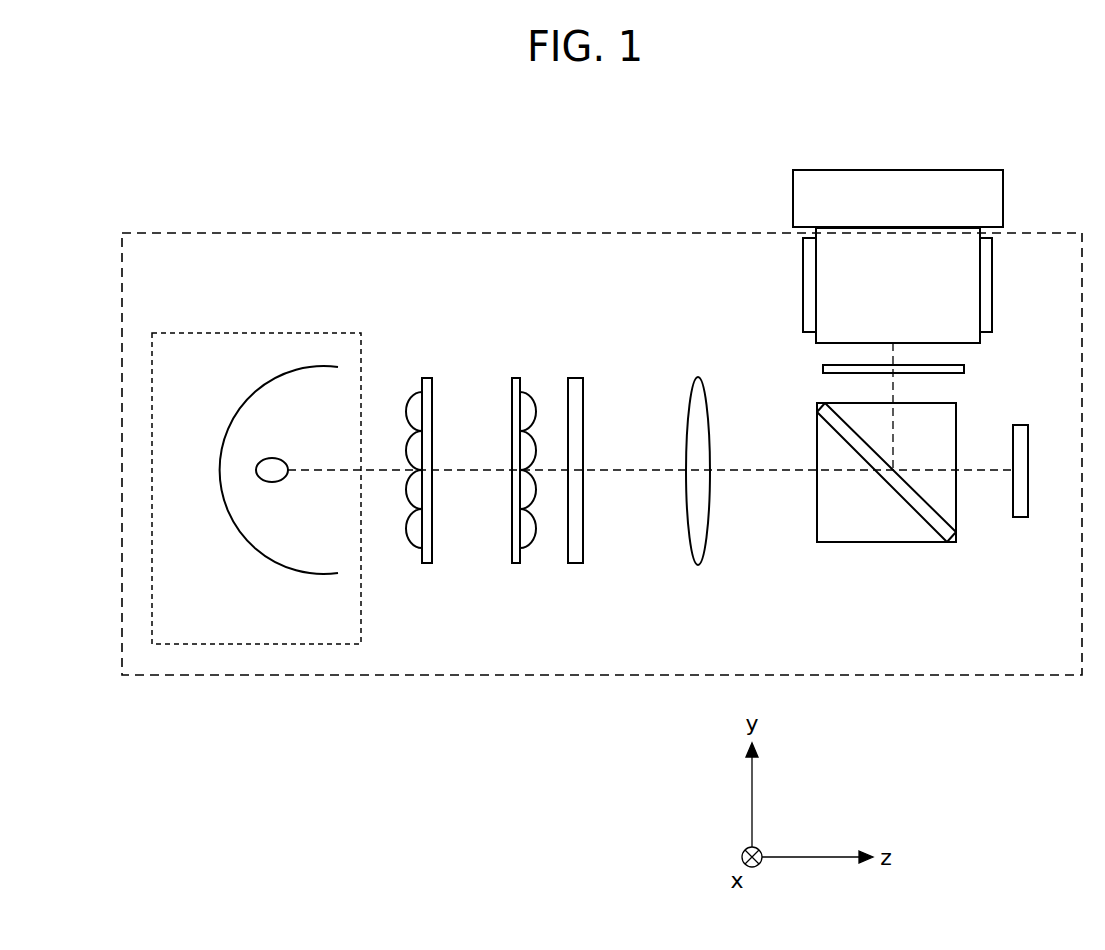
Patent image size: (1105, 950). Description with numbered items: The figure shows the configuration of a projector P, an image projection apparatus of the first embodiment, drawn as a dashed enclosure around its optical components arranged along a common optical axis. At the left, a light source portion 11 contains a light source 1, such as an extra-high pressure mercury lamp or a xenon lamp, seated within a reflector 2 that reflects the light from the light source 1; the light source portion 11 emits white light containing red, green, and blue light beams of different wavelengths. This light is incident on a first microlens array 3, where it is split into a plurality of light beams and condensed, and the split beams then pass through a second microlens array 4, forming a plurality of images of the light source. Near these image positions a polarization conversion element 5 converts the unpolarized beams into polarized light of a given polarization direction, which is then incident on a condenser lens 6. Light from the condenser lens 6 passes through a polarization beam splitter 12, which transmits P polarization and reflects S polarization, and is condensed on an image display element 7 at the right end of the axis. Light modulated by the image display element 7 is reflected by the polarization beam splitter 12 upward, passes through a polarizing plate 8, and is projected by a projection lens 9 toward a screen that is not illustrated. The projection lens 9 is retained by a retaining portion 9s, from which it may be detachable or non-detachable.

The projector P is at (226, 232).
The light source 1 is at (271, 482).
The reflector 2 is at (302, 570).
The first microlens array 3 is at (422, 384).
The second microlens array 4 is at (512, 384).
The polarization conversion element 5 is at (568, 384).
The condenser lens 6 is at (693, 418).
The image display element 7 is at (1019, 424).
The polarizing plate 8 is at (815, 362).
The projection lens 9 is at (955, 300).
The retaining portion 9s is at (992, 255).
The light source portion 11 is at (152, 597).
The polarization beam splitter 12 is at (884, 527).